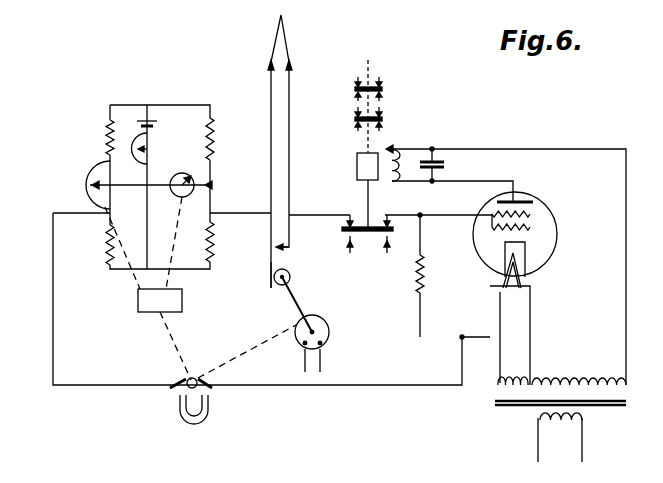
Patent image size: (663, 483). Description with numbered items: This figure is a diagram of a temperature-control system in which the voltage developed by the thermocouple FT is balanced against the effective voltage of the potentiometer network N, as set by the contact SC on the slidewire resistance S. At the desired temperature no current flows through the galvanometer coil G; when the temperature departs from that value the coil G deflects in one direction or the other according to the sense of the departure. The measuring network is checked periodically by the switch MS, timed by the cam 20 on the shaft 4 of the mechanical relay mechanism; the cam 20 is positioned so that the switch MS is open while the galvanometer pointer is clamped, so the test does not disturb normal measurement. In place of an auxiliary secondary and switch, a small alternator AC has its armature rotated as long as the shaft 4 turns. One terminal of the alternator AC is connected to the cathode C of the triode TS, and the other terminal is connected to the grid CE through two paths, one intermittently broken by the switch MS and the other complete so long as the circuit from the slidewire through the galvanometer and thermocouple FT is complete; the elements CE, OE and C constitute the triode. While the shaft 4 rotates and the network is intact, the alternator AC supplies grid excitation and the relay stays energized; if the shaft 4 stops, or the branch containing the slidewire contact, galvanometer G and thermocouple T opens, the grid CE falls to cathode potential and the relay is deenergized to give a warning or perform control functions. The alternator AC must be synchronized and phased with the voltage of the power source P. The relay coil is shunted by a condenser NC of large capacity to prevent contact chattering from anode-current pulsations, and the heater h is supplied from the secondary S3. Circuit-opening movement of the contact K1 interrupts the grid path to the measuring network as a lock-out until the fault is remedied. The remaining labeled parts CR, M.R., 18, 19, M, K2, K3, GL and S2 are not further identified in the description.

The control relay CR is at (135, 148).
The potentiometer network N is at (160, 124).
The slidewire resistance S is at (98, 166).
The slidewire contact SC is at (122, 175).
The galvanometer coil G is at (185, 173).
The motor relay M.R. is at (143, 254).
The shaft 4 is at (167, 345).
The alternator AC is at (200, 375).
The thermocouple FT is at (286, 52).
The antenna lead 19 is at (291, 233).
The switch MS is at (274, 247).
The fixed contact 18 is at (270, 263).
The cam 20 is at (291, 278).
The motor M is at (326, 326).
The key plate K3 is at (383, 89).
The key plate K2 is at (383, 119).
The contact K1 is at (372, 232).
The condenser NC is at (440, 157).
The triode TS is at (556, 226).
The triode electrode OE is at (530, 199).
The grid CE is at (498, 218).
The cathode C is at (522, 260).
The heater h is at (528, 283).
The grid leak resistor GL is at (423, 283).
The secondary S3 is at (512, 382).
The secondary winding S2 is at (572, 382).
The thermocouple T is at (505, 408).
The power source P is at (562, 432).